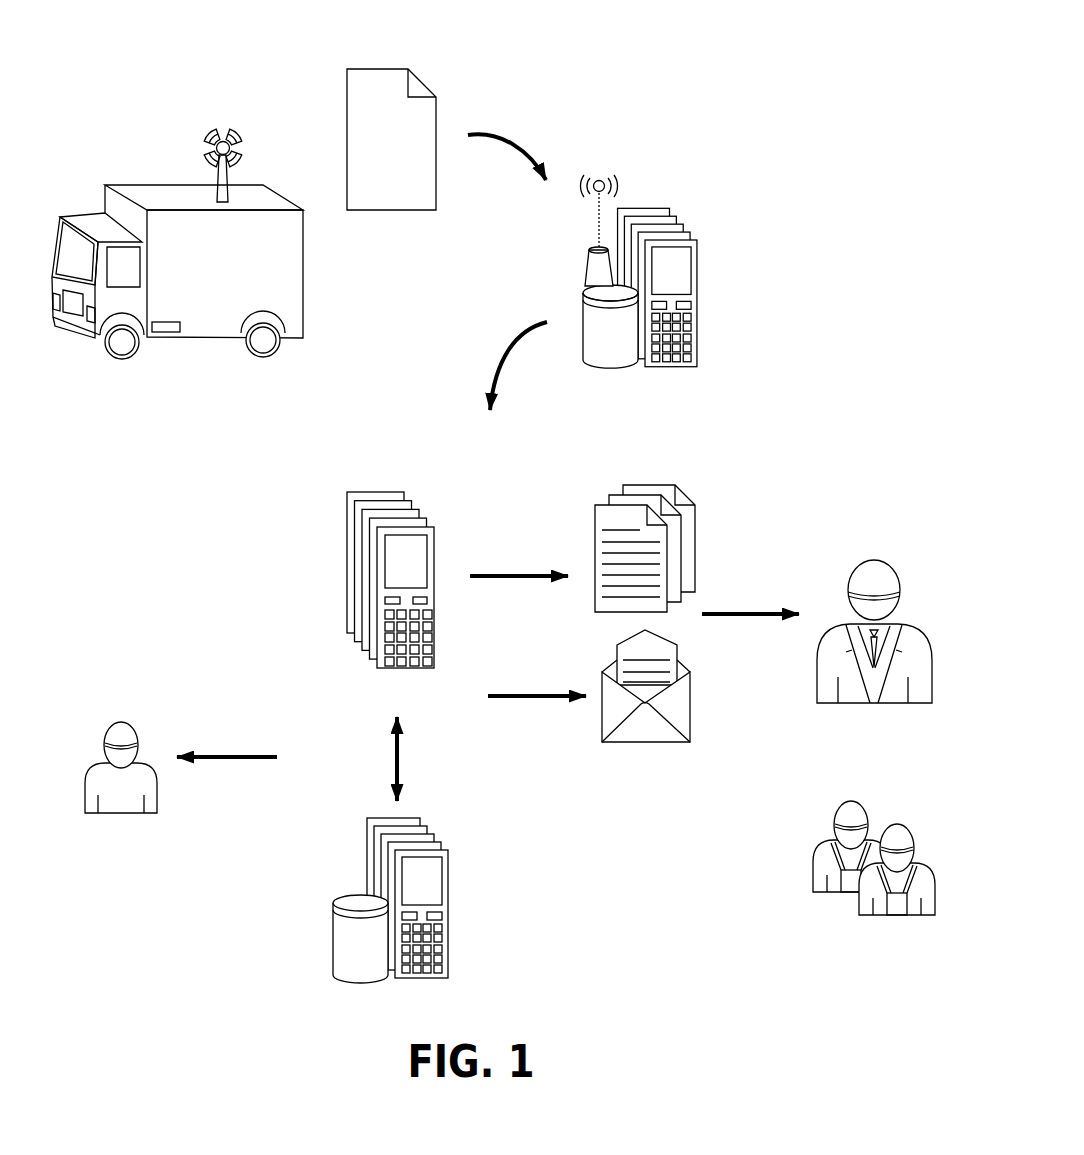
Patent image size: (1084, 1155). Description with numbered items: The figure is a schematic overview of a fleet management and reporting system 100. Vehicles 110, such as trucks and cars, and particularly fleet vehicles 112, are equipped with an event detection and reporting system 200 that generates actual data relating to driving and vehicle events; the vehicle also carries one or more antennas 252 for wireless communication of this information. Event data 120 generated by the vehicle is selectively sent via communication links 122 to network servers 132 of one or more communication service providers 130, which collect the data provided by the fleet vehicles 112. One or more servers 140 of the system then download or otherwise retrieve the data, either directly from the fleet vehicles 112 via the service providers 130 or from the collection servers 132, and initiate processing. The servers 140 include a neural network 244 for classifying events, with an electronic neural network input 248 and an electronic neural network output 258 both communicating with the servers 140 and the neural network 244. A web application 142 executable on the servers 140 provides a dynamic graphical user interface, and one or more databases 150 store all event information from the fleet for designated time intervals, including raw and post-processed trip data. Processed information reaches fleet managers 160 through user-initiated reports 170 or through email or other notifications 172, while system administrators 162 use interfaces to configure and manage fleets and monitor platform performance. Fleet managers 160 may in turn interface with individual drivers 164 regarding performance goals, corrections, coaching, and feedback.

The fleet management and reporting system 100 is at (501, 553).
The vehicles 110 is at (180, 227).
The fleet vehicles 112 is at (163, 183).
The event data 120 is at (482, 110).
The communication links 122 is at (547, 137).
The service providers 130 is at (663, 286).
The network servers 132 is at (698, 283).
The servers 140 is at (388, 545).
The web application 142 is at (330, 617).
The databases 150 is at (462, 885).
The fleet managers 160 is at (915, 584).
The system administrators 162 is at (84, 736).
The drivers 164 is at (930, 849).
The user-initiated reports 170 is at (719, 556).
The notifications 172 is at (653, 785).
The event detection and reporting system 200 is at (162, 334).
The neural network 244 is at (430, 626).
The electronic neural network input 248 is at (430, 617).
The antennas 252 is at (250, 130).
The electronic neural network output 258 is at (434, 638).